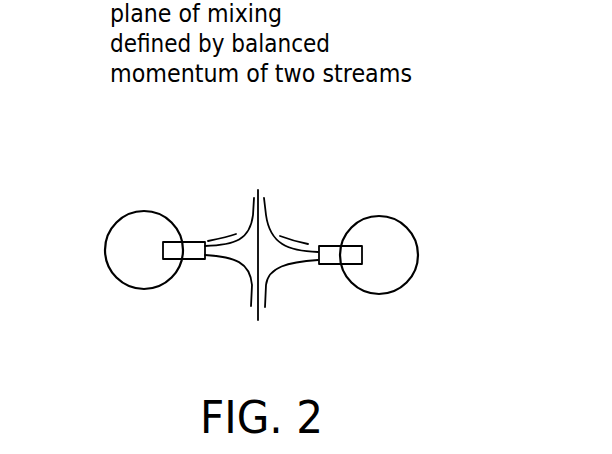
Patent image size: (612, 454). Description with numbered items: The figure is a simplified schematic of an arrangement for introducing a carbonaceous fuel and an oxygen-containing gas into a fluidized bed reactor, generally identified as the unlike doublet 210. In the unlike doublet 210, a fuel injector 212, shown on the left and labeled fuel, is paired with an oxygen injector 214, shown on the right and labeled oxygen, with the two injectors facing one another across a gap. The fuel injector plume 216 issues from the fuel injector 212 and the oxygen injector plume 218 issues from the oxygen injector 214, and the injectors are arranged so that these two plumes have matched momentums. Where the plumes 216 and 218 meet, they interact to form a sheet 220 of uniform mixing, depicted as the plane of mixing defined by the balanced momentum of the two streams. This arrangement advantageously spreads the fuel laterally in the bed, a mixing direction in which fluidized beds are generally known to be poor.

The unlike doublet 210 is at (417, 189).
The fuel injector 212 is at (109, 230).
The oxygen injector 214 is at (418, 255).
The fuel injector plume 216 is at (240, 266).
The oxygen injector plume 218 is at (284, 266).
The sheet of uniform mixing 220 is at (258, 192).